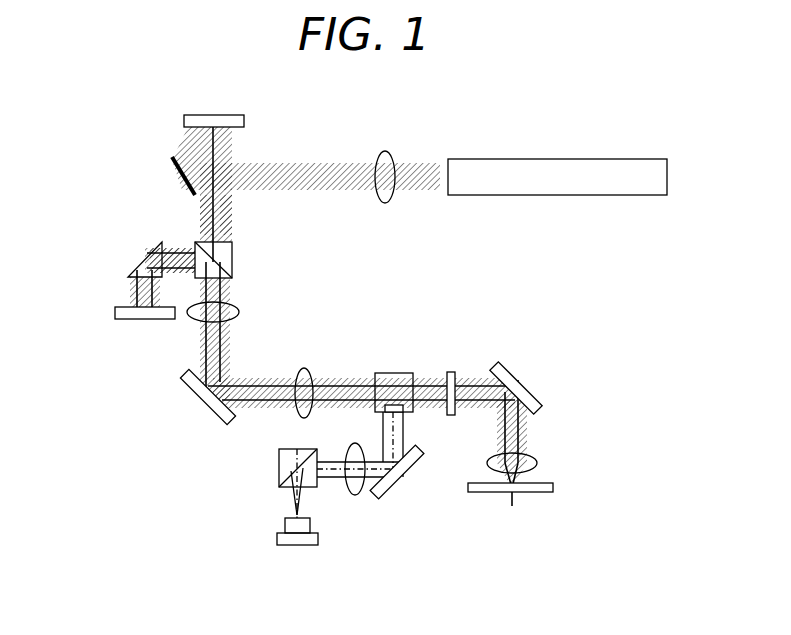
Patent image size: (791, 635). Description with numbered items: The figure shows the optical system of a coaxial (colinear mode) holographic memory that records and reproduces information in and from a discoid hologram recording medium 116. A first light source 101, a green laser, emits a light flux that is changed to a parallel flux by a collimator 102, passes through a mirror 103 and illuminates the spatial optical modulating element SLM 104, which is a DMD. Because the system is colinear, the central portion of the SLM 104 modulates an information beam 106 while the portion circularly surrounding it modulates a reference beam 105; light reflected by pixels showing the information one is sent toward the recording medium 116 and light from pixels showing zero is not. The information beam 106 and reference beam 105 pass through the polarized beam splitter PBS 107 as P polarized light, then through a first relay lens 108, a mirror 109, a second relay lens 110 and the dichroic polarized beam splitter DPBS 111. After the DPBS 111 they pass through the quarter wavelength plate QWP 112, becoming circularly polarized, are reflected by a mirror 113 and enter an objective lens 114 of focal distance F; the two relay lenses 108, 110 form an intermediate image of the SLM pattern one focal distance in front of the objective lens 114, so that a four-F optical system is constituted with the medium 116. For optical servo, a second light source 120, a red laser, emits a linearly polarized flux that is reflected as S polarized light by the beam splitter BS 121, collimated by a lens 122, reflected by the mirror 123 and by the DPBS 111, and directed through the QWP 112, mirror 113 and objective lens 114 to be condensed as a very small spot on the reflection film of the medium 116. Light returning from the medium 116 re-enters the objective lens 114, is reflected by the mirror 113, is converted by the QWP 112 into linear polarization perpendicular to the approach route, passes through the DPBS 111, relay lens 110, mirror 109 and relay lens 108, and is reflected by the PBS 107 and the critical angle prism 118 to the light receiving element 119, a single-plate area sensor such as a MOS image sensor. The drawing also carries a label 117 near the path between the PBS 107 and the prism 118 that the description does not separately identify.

The first light source 101 is at (668, 174).
The collimator 102 is at (385, 150).
The mirror 103 is at (172, 170).
The spatial optical modulating element (SLM) 104 is at (185, 121).
The reference beam 105 is at (234, 206).
The information beam 106 is at (200, 213).
The polarized beam splitter (PBS) 107 is at (233, 250).
The first relay lens 108 is at (240, 312).
The mirror 109 is at (188, 393).
The second relay lens 110 is at (303, 368).
The dichroic polarized beam splitter (DPBS) 111 is at (394, 372).
The quarter wavelength plate (QWP) 112 is at (452, 415).
The mirror 113 is at (527, 381).
The objective lens 114 is at (537, 463).
The hologram recording medium 116 is at (540, 492).
The light beam 117 is at (183, 232).
The critical angle prism 118 is at (140, 263).
The light receiving element 119 is at (115, 313).
The second light source 120 is at (277, 540).
The beam splitter (BS) 121 is at (279, 470).
The lens 122 is at (355, 495).
The mirror 123 is at (410, 490).